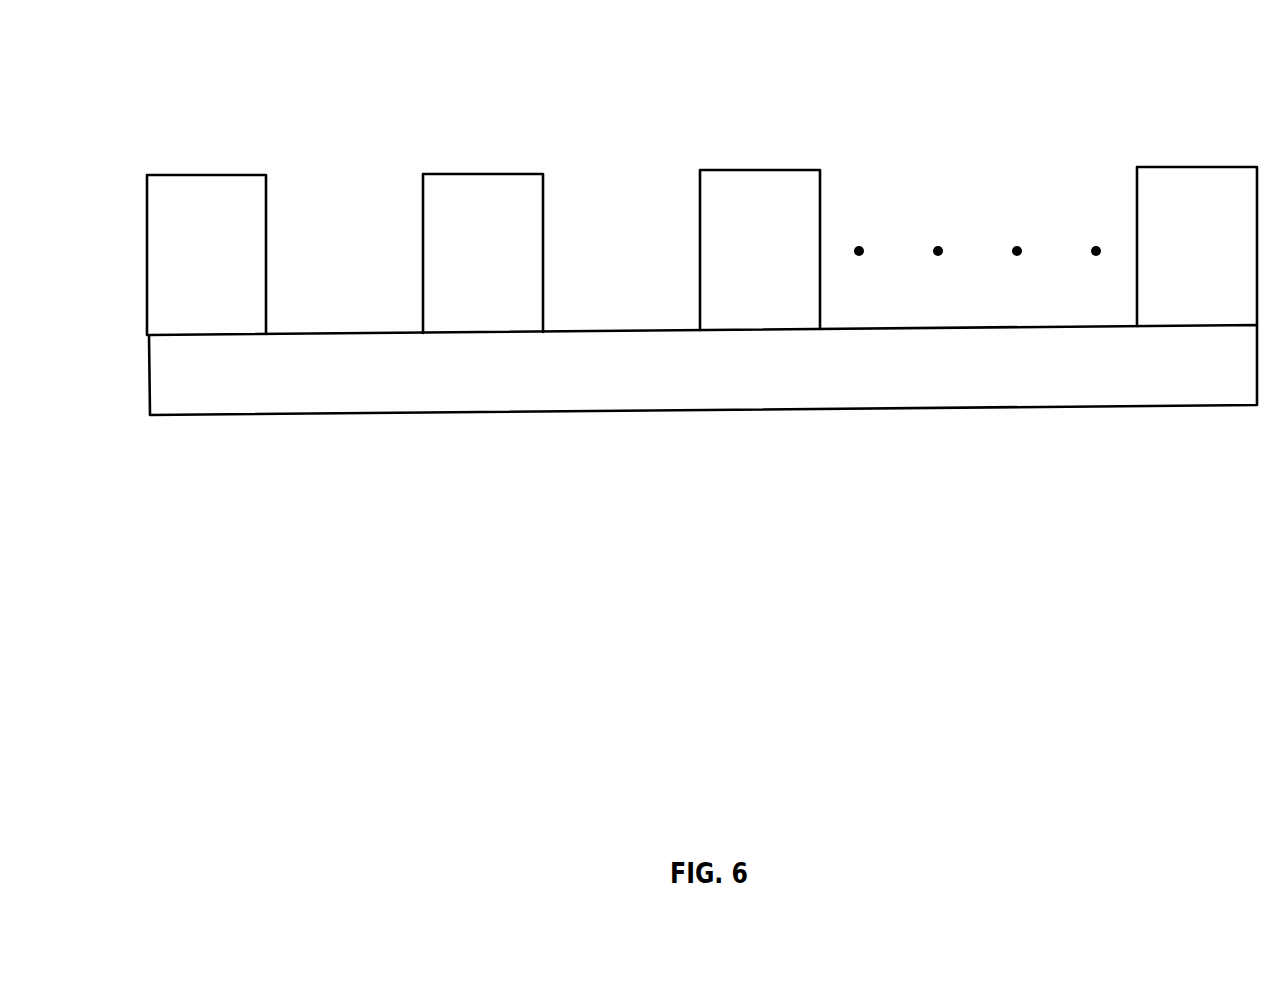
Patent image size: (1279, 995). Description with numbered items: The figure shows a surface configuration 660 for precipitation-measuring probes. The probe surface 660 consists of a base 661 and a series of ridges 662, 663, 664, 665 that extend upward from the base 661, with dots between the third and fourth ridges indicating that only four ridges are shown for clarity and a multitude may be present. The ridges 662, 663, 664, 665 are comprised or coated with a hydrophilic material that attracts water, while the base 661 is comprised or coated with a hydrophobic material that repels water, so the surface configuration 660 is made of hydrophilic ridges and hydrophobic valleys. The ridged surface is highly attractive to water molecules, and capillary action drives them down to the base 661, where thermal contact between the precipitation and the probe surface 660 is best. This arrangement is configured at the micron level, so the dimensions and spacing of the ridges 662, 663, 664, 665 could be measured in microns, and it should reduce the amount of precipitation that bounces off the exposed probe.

The surface configuration 660 is at (702, 216).
The base 661 is at (703, 370).
The ridge 662 is at (206, 255).
The ridge 663 is at (483, 253).
The ridge 664 is at (760, 250).
The ridge 665 is at (1197, 246).